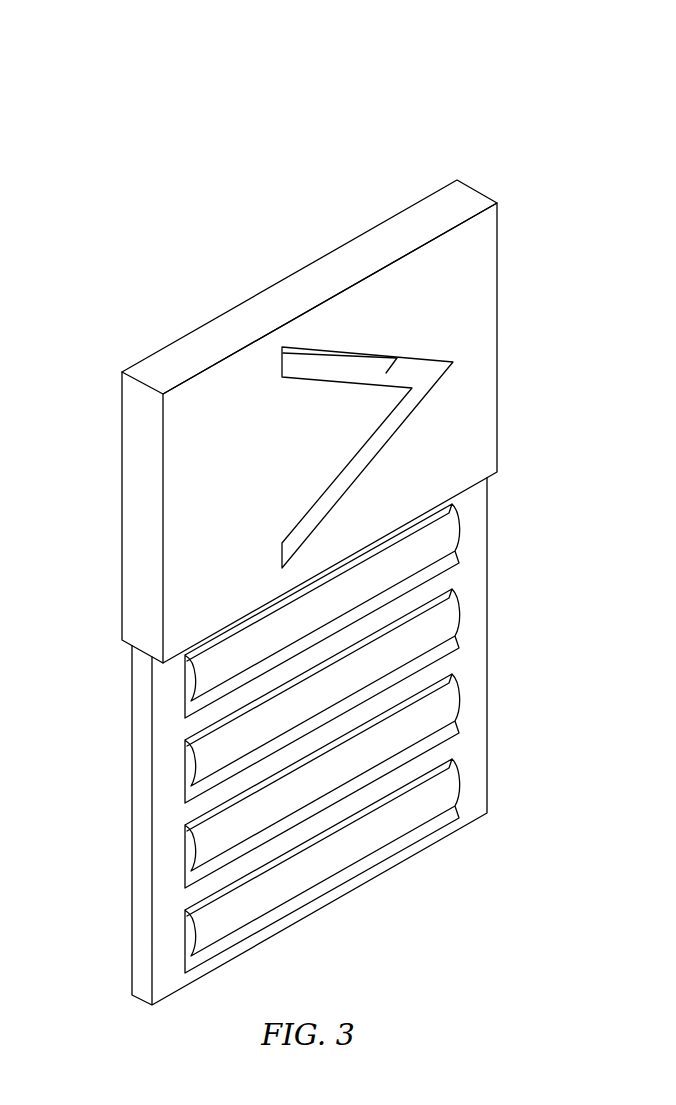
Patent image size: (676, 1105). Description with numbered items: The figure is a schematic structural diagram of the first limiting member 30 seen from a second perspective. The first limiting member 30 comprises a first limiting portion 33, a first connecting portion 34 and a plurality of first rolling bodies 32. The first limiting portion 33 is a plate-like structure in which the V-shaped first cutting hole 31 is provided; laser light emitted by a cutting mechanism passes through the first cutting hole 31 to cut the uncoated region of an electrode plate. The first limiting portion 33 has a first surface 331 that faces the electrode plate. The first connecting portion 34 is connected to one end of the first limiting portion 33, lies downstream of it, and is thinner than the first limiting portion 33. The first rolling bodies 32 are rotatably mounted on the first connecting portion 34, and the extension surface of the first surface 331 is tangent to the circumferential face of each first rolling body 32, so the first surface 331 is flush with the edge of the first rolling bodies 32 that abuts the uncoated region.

The first limiting member 30 is at (297, 95).
The first cutting hole 31 is at (419, 380).
The first rolling body 32 is at (417, 638).
The first limiting portion 33 is at (379, 320).
The first surface 331 is at (212, 478).
The first connecting portion 34 is at (162, 823).